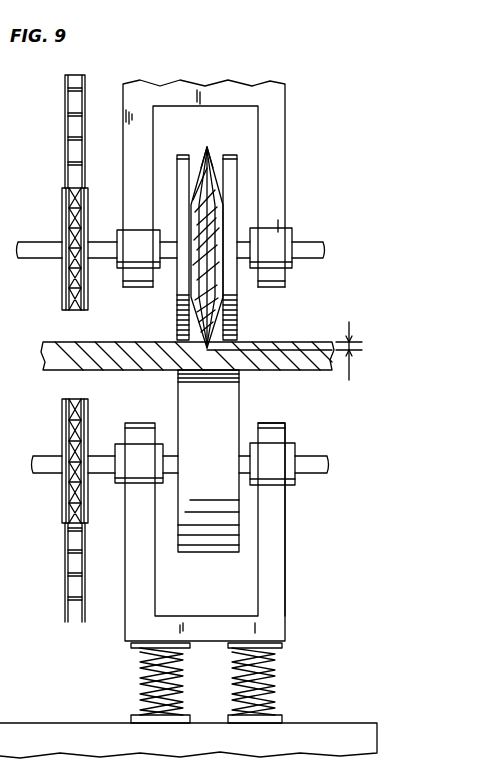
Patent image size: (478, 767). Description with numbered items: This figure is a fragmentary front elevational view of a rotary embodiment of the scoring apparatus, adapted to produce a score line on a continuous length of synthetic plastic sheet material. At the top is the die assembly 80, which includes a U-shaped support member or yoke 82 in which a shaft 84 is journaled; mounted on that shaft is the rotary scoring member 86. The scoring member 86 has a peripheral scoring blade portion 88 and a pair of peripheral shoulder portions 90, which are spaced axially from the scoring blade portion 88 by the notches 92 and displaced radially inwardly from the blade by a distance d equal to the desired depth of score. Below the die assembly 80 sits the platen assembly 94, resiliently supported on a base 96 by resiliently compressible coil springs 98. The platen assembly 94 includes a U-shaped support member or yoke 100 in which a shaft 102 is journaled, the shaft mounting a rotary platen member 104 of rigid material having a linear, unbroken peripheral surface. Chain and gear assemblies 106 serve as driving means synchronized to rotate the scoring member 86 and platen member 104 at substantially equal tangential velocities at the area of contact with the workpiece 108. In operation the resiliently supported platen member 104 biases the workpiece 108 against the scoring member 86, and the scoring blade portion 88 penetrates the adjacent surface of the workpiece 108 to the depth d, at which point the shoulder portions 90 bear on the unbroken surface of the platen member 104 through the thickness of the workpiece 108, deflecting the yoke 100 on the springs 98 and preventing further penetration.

The die assembly 80 is at (298, 182).
The U-shaped support member or yoke 82 is at (278, 97).
The shaft 84 is at (97, 243).
The rotary scoring member 86 is at (216, 152).
The peripheral scoring blade portion 88 is at (207, 147).
The peripheral shoulder portions 90 is at (180, 155).
The notches 92 is at (178, 158).
The platen assembly 94 is at (295, 582).
The base 96 is at (322, 730).
The resiliently compressible coil springs 98 is at (272, 672).
The U-shaped support member or yoke 100 is at (280, 532).
The shaft 102 is at (312, 456).
The rotary platen member 104 is at (233, 403).
The chain and gear assemblies 106 is at (60, 222).
The workpiece 108 is at (143, 308).